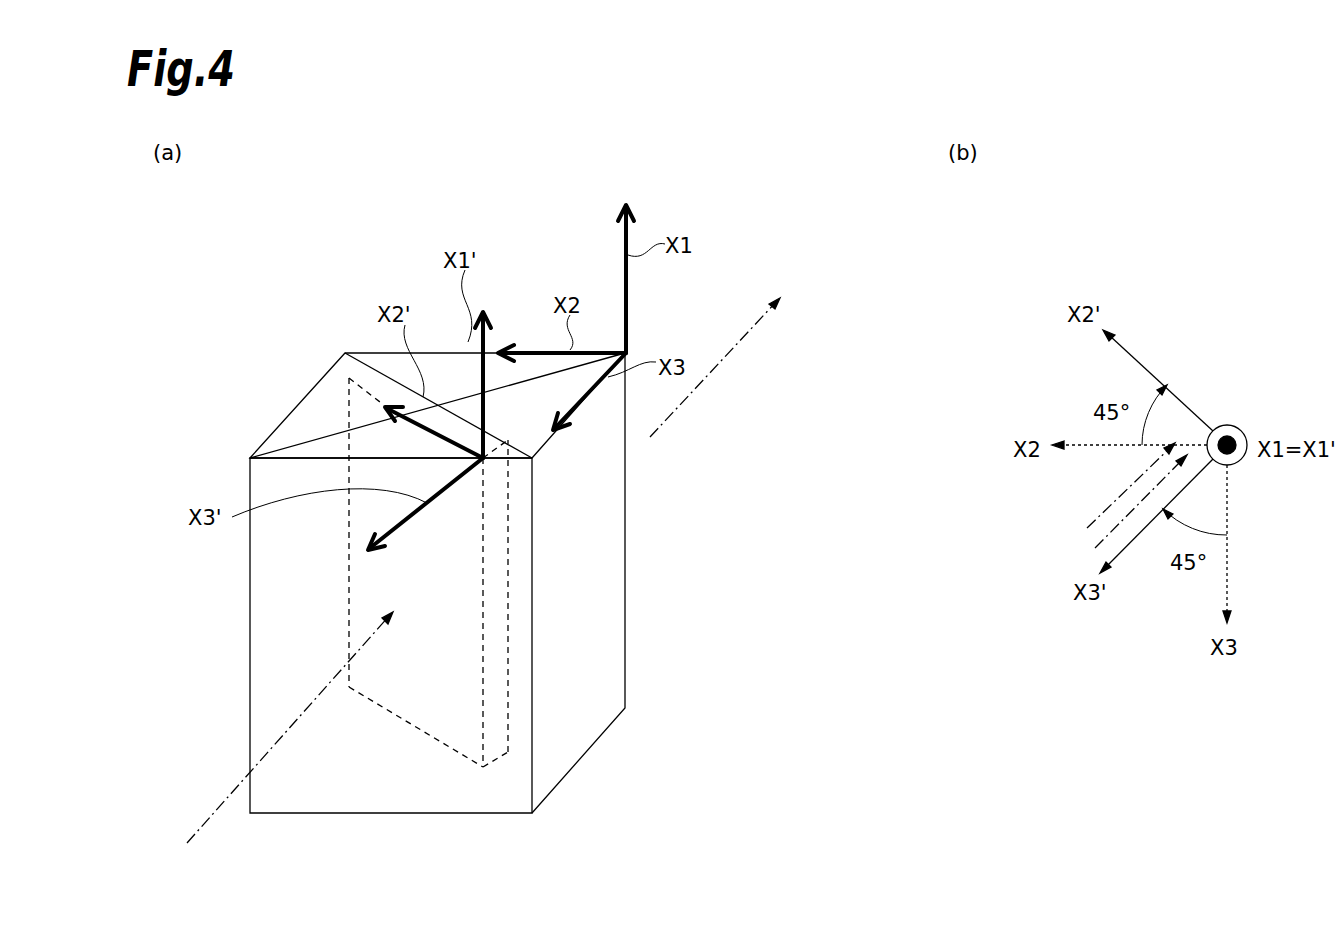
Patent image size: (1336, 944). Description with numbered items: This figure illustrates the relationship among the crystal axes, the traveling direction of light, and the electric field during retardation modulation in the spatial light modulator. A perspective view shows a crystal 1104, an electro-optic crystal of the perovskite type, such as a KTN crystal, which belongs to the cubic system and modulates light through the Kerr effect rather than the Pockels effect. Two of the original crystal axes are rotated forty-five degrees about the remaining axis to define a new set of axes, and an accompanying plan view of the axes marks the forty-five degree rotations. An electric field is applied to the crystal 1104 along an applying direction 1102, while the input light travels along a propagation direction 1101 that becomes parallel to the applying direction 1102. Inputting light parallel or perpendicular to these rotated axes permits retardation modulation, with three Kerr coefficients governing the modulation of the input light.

The propagation direction 1101 is at (203, 828).
The applying direction 1102 is at (737, 350).
The crystal 1104 is at (370, 571).